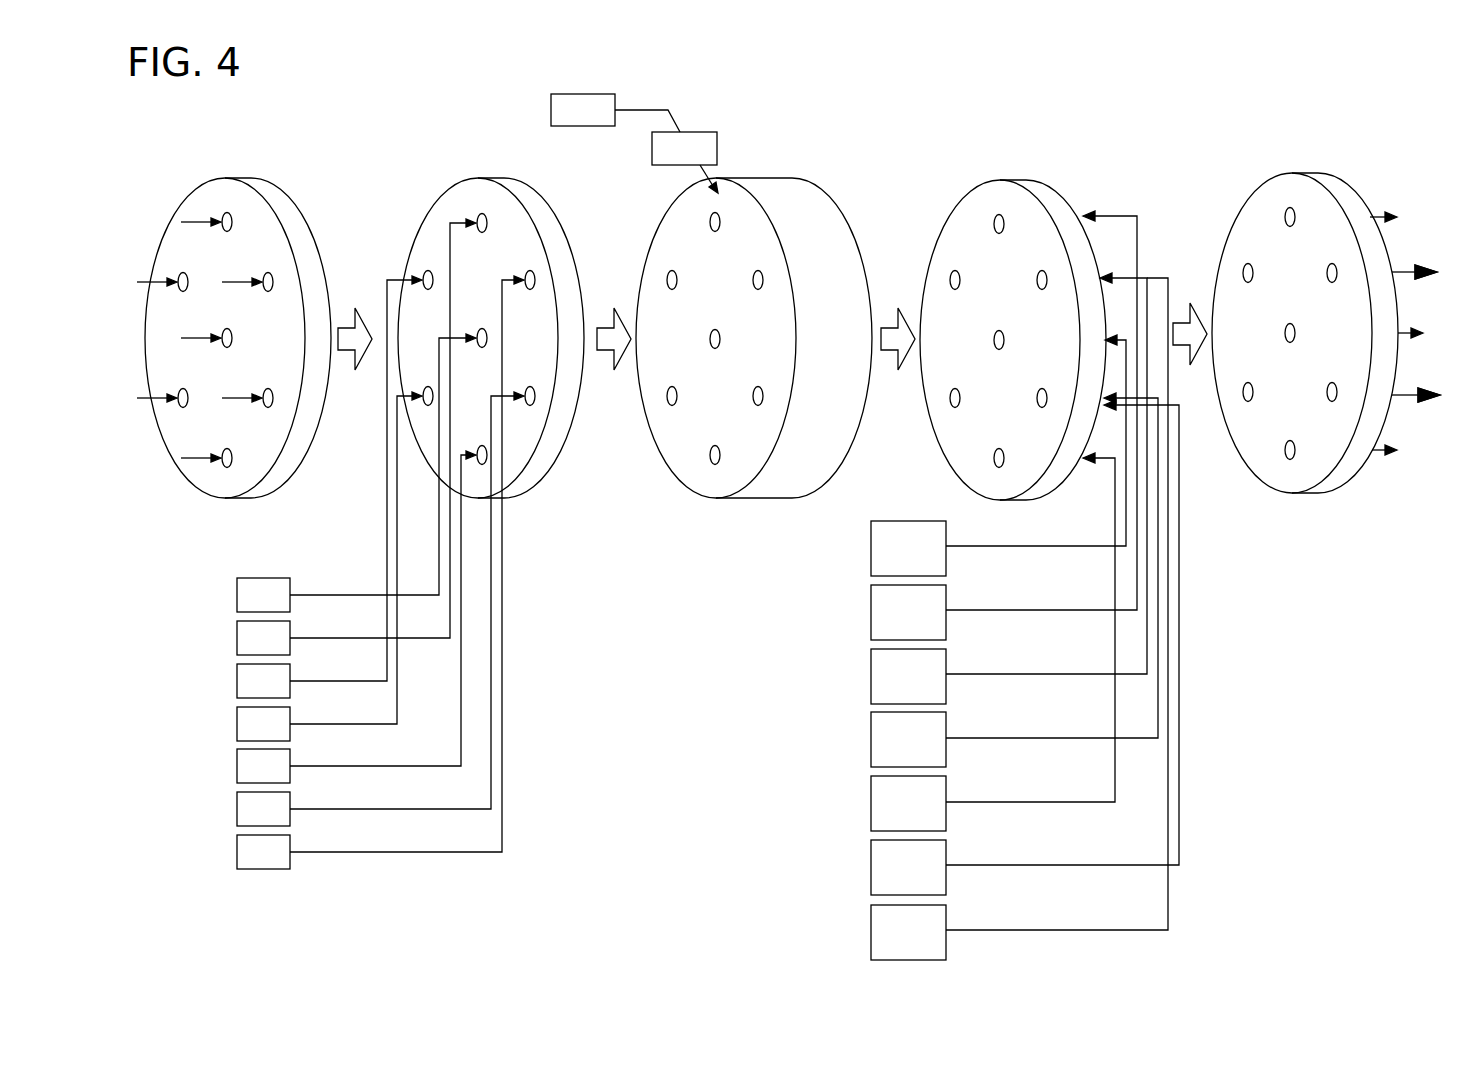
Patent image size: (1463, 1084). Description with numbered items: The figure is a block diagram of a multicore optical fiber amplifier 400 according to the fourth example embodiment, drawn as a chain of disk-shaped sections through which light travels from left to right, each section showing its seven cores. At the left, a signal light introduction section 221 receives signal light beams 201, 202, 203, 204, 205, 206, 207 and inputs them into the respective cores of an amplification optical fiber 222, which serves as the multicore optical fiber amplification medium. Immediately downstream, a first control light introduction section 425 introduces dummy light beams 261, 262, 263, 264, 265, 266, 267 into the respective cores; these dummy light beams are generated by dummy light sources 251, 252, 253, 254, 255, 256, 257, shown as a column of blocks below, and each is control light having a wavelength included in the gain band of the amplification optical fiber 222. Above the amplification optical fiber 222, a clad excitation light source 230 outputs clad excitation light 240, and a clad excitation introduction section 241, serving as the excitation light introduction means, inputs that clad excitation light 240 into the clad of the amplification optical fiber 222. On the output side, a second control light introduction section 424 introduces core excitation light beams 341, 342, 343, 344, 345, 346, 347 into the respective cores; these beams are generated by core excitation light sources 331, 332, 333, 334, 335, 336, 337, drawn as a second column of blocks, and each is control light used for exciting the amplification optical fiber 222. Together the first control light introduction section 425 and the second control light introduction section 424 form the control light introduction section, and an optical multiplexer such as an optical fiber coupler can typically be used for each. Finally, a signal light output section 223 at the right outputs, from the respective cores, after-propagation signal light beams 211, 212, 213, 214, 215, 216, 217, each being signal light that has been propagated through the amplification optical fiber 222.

The multicore optical fiber amplifier 400 is at (907, 123).
The signal light introduction section 221 is at (248, 178).
The signal light beam 201 is at (197, 341).
The signal light beam 202 is at (185, 222).
The signal light beam 203 is at (162, 281).
The signal light beam 204 is at (165, 399).
The signal light beam 205 is at (183, 457).
The signal light beam 206 is at (233, 401).
The signal light beam 207 is at (243, 278).
The first control light introduction section 425 is at (500, 178).
The dummy light beam 261 is at (466, 345).
The dummy light beam 262 is at (462, 220).
The dummy light beam 263 is at (398, 280).
The dummy light beam 264 is at (410, 400).
The dummy light beam 265 is at (469, 468).
The dummy light beam 266 is at (514, 402).
The dummy light beam 267 is at (510, 279).
The dummy light source 251 is at (237, 595).
The dummy light source 252 is at (237, 638).
The dummy light source 253 is at (237, 681).
The dummy light source 254 is at (237, 724).
The dummy light source 255 is at (237, 766).
The dummy light source 256 is at (237, 809).
The dummy light source 257 is at (237, 852).
The amplification optical fiber 222 is at (790, 180).
The clad excitation light source 230 is at (580, 94).
The clad excitation light 240 is at (638, 110).
The clad excitation introduction section 241 is at (700, 131).
The second control light introduction section 424 is at (1022, 179).
The core excitation light beam 341 is at (1120, 338).
The core excitation light beam 342 is at (1102, 215).
The core excitation light beam 343 is at (1116, 277).
The core excitation light beam 344 is at (1112, 396).
The core excitation light beam 345 is at (1088, 460).
The core excitation light beam 346 is at (1112, 405).
The core excitation light beam 347 is at (1160, 277).
The core excitation light source 331 is at (948, 529).
The core excitation light source 332 is at (948, 593).
The core excitation light source 333 is at (948, 657).
The core excitation light source 334 is at (948, 720).
The core excitation light source 335 is at (948, 784).
The core excitation light source 336 is at (948, 848).
The core excitation light source 337 is at (948, 913).
The signal light output section 223 is at (1310, 173).
The after-propagation signal light beam 211 is at (1415, 333).
The after-propagation signal light beam 212 is at (1380, 215).
The after-propagation signal light beam 213 is at (1400, 270).
The after-propagation signal light beam 214 is at (1420, 394).
The after-propagation signal light beam 215 is at (1380, 450).
The after-propagation signal light beam 216 is at (1420, 396).
The after-propagation signal light beam 217 is at (1428, 272).